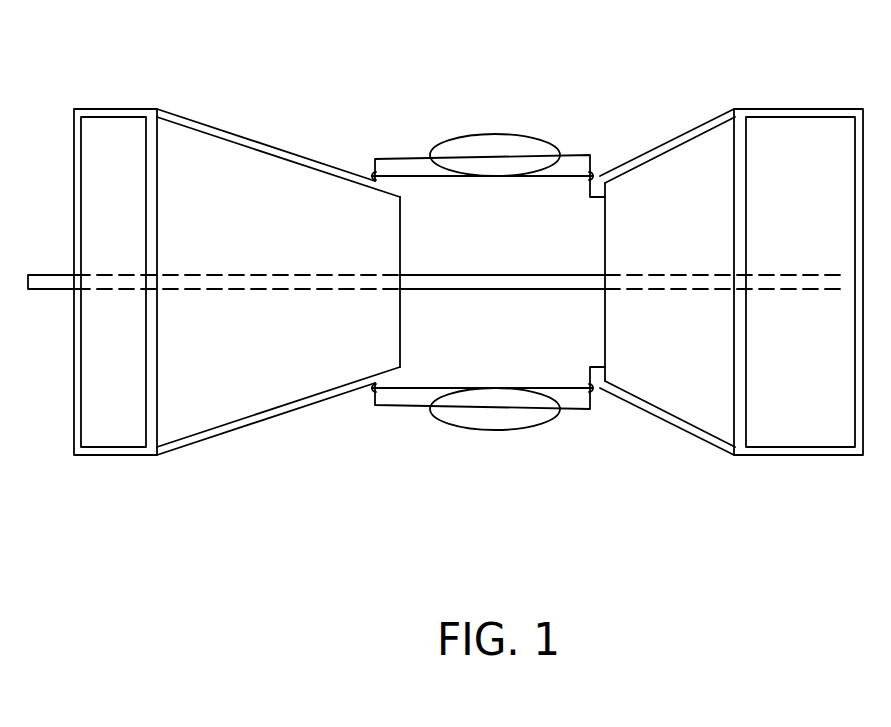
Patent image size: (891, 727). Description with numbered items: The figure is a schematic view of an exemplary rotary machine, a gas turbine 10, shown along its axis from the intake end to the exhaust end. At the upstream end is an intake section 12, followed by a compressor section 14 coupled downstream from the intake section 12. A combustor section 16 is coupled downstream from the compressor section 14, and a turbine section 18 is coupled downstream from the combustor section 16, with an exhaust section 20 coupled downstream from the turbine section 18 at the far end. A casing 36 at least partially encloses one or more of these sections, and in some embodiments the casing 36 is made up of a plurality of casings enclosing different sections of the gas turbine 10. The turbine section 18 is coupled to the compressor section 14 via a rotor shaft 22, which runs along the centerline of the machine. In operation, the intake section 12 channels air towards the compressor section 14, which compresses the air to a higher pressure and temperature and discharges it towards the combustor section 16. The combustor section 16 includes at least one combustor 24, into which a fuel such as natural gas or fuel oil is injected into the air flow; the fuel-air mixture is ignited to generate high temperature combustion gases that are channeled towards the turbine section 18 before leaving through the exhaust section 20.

The gas turbine 10 is at (320, 57).
The intake section 12 is at (98, 116).
The compressor section 14 is at (262, 421).
The combustor section 16 is at (397, 482).
The turbine section 18 is at (662, 152).
The exhaust section 20 is at (770, 115).
The rotor shaft 22 is at (502, 290).
The combustor 24 is at (495, 178).
The casing 36 is at (705, 121).